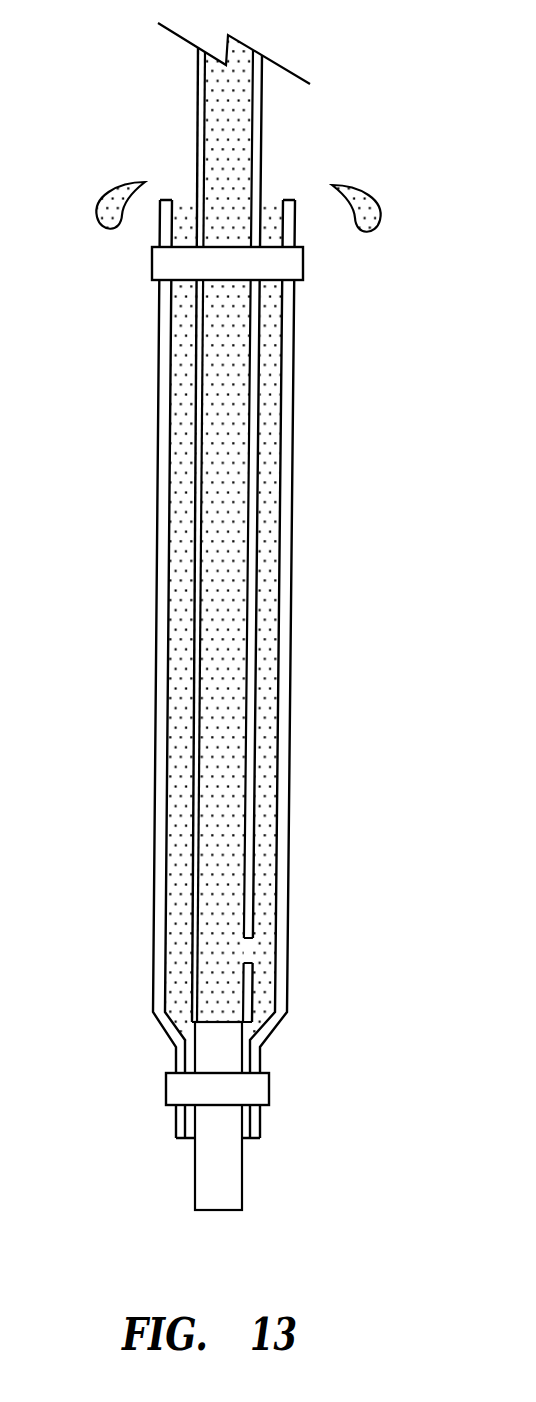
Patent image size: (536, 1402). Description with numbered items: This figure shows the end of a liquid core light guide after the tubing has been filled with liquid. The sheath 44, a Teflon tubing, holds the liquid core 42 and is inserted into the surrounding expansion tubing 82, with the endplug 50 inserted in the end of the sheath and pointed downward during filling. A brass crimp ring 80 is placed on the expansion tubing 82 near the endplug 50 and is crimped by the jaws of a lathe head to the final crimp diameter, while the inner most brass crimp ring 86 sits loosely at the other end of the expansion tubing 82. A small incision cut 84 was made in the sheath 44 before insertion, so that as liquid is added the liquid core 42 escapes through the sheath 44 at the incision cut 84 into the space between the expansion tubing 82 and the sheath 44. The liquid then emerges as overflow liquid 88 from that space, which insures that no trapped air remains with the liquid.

The liquid core 42 is at (232, 163).
The sheath 44 is at (257, 96).
The endplug 50 is at (242, 1180).
The brass crimp ring 80 is at (270, 1088).
The expansion tubing 82 is at (287, 897).
The incision cut 84 is at (245, 948).
The inner most brass crimp ring 86 is at (285, 267).
The overflow liquid 88 is at (105, 208).